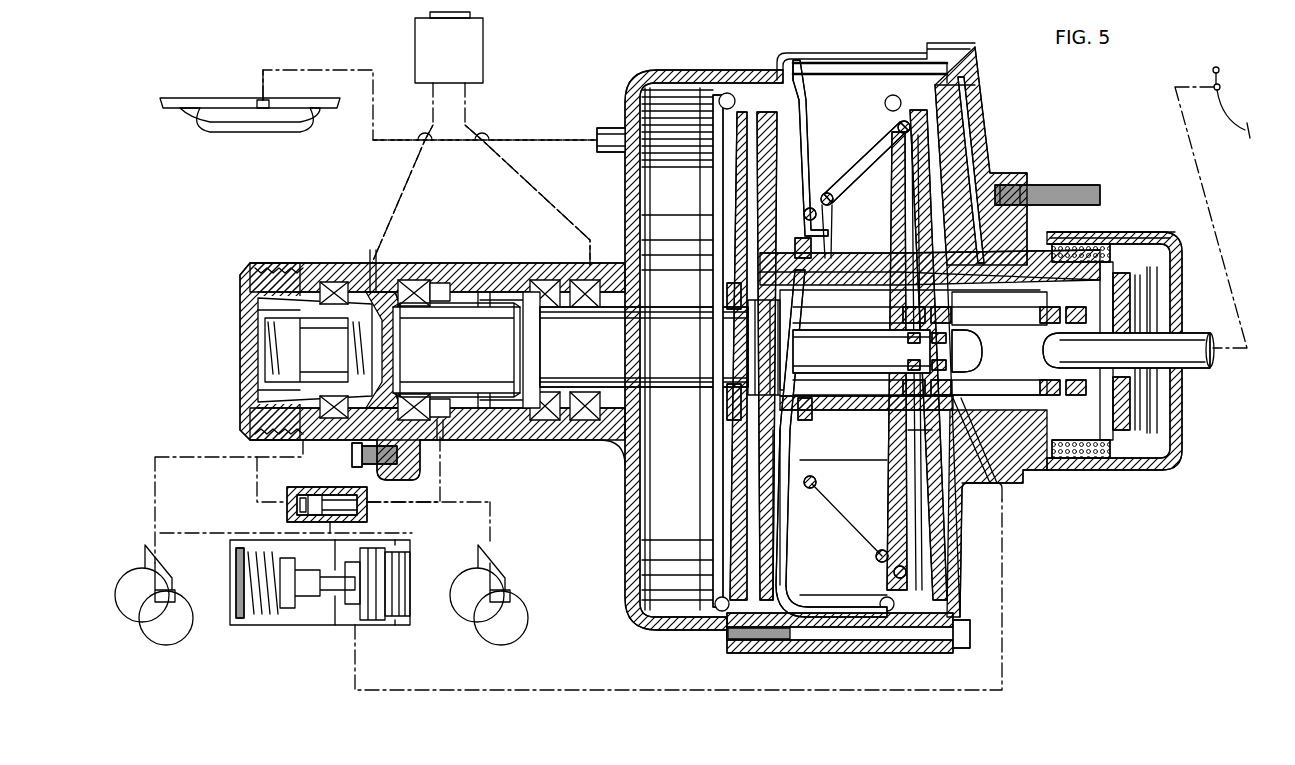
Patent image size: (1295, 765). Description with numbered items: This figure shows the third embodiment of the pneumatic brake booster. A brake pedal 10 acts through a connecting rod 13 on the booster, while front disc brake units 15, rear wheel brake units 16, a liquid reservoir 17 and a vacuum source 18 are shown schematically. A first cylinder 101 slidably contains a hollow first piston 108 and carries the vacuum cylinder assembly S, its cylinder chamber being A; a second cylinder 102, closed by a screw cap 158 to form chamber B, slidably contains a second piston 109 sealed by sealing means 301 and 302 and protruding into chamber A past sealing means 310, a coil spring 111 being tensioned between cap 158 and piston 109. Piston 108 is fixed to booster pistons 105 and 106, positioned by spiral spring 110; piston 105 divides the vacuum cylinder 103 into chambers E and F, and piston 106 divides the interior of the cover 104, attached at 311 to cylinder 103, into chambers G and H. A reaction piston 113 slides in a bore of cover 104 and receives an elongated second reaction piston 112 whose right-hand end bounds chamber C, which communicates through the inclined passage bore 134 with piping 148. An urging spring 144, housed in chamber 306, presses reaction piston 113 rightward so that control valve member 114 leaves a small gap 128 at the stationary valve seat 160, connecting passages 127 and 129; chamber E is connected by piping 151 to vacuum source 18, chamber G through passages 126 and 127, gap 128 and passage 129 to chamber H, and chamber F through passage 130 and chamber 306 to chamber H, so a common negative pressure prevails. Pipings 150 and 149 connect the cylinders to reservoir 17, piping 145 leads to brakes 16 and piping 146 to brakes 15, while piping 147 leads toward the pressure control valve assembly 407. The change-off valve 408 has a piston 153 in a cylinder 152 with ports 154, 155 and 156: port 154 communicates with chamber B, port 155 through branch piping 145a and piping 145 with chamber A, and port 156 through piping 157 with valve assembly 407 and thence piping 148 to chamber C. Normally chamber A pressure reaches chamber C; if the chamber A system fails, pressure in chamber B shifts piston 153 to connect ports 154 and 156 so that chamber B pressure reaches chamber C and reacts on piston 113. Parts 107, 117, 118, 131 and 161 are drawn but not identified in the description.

The brake pedal 10 is at (1245, 126).
The connecting rod 13 is at (1195, 336).
The disc brake units 15 is at (153, 622).
The rear wheel brake units 16 is at (510, 628).
The reservoir 17 is at (462, 47).
The vacuum source 18 is at (266, 110).
The first cylinder 101 is at (535, 441).
The second cylinder 102 is at (320, 268).
The vacuum cylinder 103 is at (797, 160).
The cover 104 is at (994, 163).
The booster piston 105 is at (745, 182).
The booster piston 106 is at (905, 207).
The seal holder 107 is at (730, 408).
The first piston 108 is at (655, 354).
The second piston 109 is at (443, 354).
The spiral spring 110 is at (887, 512).
The coil spring 111 is at (266, 362).
The second reaction piston 112 is at (861, 351).
The reaction piston 113 is at (1030, 347).
The control valve member 114 is at (1150, 384).
The end housing 117 is at (1181, 428).
The cover plate 118 is at (1088, 236).
The passage 126 is at (871, 66).
The fluid passage 127 is at (980, 108).
The valve gap 128 is at (1105, 462).
The fluid passage 129 is at (1030, 240).
The passage 130 is at (758, 440).
The seal 131 is at (1060, 462).
The passage bore 134 is at (985, 478).
The urging spring 144 is at (806, 402).
The piping 145 is at (490, 514).
The branch piping 145a is at (415, 506).
The piping 146 is at (225, 455).
The piping 147 is at (254, 482).
The piping 148 is at (758, 690).
The piping 149 is at (522, 176).
The piping 150 is at (400, 182).
The piping 151 is at (506, 140).
The cylinder 152 is at (300, 490).
The piston 153 is at (320, 495).
The port 154 is at (292, 505).
The port 155 is at (367, 498).
The port 156 is at (338, 520).
The piping 157 is at (262, 533).
The screw cap 158 is at (252, 348).
The valve seat 160 is at (1108, 402).
The output shaft 161 is at (1108, 356).
The sealing means 301 is at (340, 283).
The sealing means 302 is at (406, 280).
The chamber 306 is at (990, 398).
The sealing means 310 is at (426, 283).
The fastening 311 is at (870, 645).
The pressure control valve assembly 407 is at (294, 637).
The change-off valve 408 is at (339, 474).
The cylinder chamber A is at (506, 364).
The chamber B is at (262, 312).
The chamber C is at (975, 357).
The chamber E is at (684, 552).
The chamber F is at (774, 509).
The chamber G is at (862, 553).
The chamber H is at (942, 509).
The vacuum cylinder assembly S is at (651, 644).